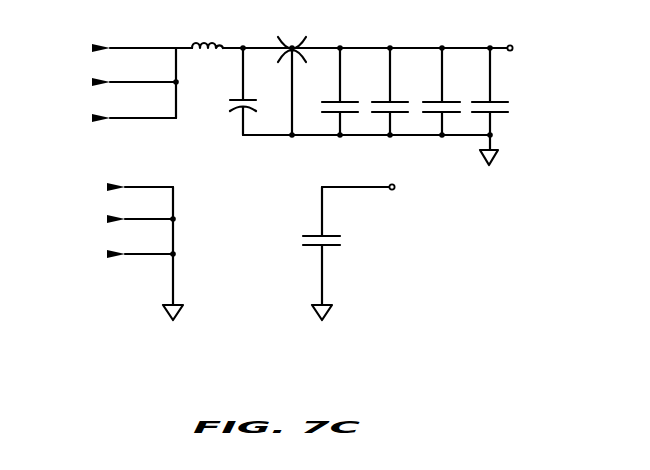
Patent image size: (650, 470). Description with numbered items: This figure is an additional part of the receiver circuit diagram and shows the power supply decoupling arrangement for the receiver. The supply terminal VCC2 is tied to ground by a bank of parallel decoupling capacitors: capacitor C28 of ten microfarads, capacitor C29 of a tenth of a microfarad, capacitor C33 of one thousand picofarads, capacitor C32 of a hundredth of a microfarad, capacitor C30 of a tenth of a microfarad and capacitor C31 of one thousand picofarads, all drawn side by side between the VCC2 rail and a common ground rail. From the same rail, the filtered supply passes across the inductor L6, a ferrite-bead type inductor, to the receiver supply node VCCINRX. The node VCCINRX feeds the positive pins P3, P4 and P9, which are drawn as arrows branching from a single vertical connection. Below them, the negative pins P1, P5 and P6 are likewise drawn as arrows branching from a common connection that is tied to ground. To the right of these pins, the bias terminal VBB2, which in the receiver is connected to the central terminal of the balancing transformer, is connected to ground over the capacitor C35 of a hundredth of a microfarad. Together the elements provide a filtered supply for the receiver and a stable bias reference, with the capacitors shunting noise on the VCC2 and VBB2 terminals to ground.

The positive pin P3 is at (122, 47).
The positive pin P4 is at (122, 82).
The positive pin P9 is at (122, 117).
The receiver supply node VCCINRX is at (151, 38).
The inductor L6 is at (208, 35).
The capacitor C28 is at (224, 91).
The capacitor C29 is at (291, 74).
The capacitor C33 is at (330, 91).
The capacitor C32 is at (380, 91).
The capacitor C30 is at (433, 91).
The capacitor C31 is at (507, 106).
The supply voltage terminal VCC2 is at (540, 49).
The negative pin P1 is at (129, 187).
The negative pin P5 is at (129, 222).
The negative pin P6 is at (129, 257).
The bias voltage terminal VBB2 is at (386, 191).
The capacitor C35 is at (341, 253).